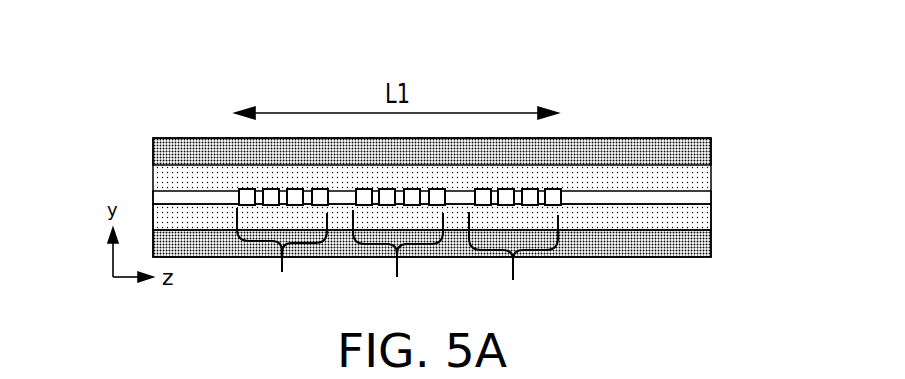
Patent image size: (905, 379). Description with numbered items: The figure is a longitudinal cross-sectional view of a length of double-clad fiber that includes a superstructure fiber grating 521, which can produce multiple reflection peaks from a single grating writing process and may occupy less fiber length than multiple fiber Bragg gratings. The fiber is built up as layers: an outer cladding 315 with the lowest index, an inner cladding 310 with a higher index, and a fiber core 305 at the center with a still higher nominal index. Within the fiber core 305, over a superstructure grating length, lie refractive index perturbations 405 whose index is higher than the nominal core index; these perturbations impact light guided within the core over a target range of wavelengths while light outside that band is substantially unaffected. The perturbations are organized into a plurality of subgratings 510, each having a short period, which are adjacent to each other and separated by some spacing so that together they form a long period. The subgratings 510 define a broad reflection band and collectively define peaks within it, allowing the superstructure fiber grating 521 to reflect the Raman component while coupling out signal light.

The superstructure fiber grating 521 is at (114, 93).
The refractive index perturbations 405 is at (563, 196).
The outer cladding 315 is at (700, 150).
The fiber core 305 is at (703, 200).
The inner cladding 310 is at (703, 222).
The subgratings 510 is at (397, 260).